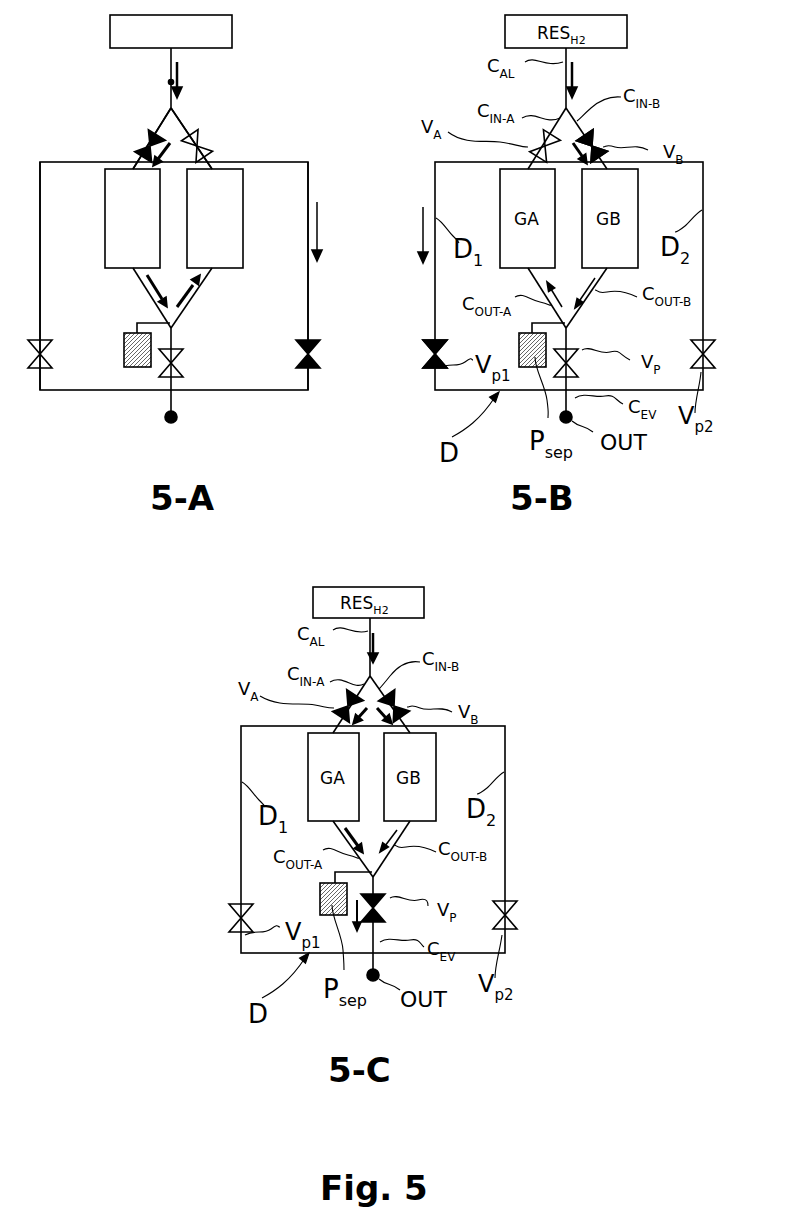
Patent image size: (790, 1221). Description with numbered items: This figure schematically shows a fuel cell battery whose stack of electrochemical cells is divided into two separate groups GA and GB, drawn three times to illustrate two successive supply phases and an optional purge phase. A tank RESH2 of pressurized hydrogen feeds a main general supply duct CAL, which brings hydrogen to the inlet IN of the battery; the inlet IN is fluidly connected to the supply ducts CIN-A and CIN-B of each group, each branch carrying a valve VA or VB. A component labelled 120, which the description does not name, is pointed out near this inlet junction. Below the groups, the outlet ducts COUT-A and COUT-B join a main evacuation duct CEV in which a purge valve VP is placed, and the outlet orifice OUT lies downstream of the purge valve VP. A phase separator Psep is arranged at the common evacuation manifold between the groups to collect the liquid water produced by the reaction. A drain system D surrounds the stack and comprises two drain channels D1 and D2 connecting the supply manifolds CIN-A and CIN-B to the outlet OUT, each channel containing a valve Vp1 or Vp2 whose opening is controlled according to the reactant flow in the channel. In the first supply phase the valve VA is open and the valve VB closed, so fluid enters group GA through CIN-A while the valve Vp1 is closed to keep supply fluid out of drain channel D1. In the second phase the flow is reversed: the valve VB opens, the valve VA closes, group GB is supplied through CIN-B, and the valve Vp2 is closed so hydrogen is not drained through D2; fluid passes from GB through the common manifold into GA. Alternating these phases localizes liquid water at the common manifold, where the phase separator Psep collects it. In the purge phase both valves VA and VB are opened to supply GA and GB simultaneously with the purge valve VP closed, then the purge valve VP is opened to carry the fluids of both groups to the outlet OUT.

The gas distribution device 120 is at (197, 97).
The tank of pressurized hydrogen RESH2 is at (171, 31).
The main general supply duct CAL is at (168, 62).
The inlet IN is at (168, 83).
The supply duct of group GA CIN-A is at (165, 118).
The supply duct of group GB CIN-B is at (182, 121).
The valve VA is at (133, 147).
The valve VB is at (208, 147).
The drain system D is at (100, 397).
The drain channel D1 is at (41, 218).
The drain channel D2 is at (307, 210).
The first group of electrochemical cells GA is at (132, 218).
The last group of electrochemical cells GB is at (215, 218).
The outlet duct COUT-A is at (157, 305).
The outlet duct COUT-B is at (200, 290).
The main evacuation duct CEV is at (180, 398).
The outlet orifice OUT is at (177, 421).
The phase separator Psep is at (140, 357).
The purge valve VP is at (187, 350).
The valve of drain channel D1 Vp1 is at (44, 368).
The valve of drain channel D2 Vp2 is at (306, 372).